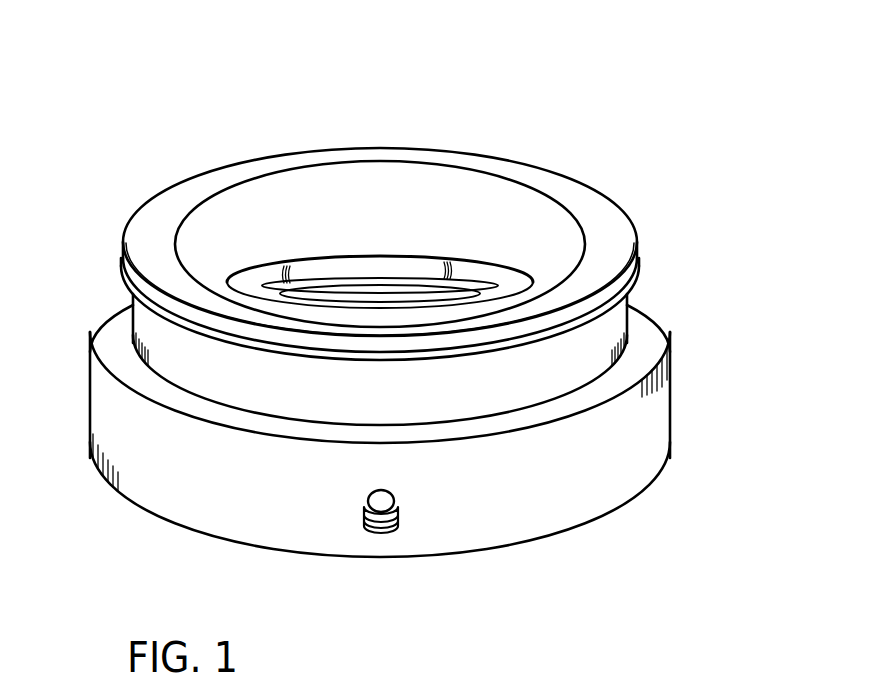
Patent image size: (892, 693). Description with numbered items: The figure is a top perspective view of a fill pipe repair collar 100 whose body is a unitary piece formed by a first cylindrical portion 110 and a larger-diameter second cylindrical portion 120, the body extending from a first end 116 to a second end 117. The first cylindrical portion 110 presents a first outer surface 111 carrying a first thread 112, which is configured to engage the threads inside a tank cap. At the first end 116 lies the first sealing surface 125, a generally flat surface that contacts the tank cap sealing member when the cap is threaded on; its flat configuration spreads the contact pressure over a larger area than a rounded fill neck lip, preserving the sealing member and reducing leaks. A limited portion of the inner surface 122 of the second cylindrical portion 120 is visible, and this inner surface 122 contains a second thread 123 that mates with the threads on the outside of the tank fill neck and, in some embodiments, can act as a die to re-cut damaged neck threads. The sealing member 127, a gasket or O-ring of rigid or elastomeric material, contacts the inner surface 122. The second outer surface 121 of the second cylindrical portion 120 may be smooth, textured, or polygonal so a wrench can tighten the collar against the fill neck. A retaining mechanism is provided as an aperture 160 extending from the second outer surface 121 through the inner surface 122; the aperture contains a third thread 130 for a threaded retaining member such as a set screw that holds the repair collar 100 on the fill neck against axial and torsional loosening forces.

The repair collar 100 is at (406, 333).
The first cylindrical portion 110 is at (323, 150).
The first outer surface 111 is at (142, 321).
The first thread 112 is at (637, 268).
The first end 116 is at (411, 218).
The second end 117 is at (676, 463).
The second cylindrical portion 120 is at (406, 447).
The second outer surface 121 is at (434, 447).
The inner surface 122 is at (462, 294).
The second thread 123 is at (281, 295).
The first sealing surface 125 is at (362, 206).
The sealing member 127 is at (348, 268).
The third thread 130 is at (395, 564).
The aperture 160 is at (395, 507).